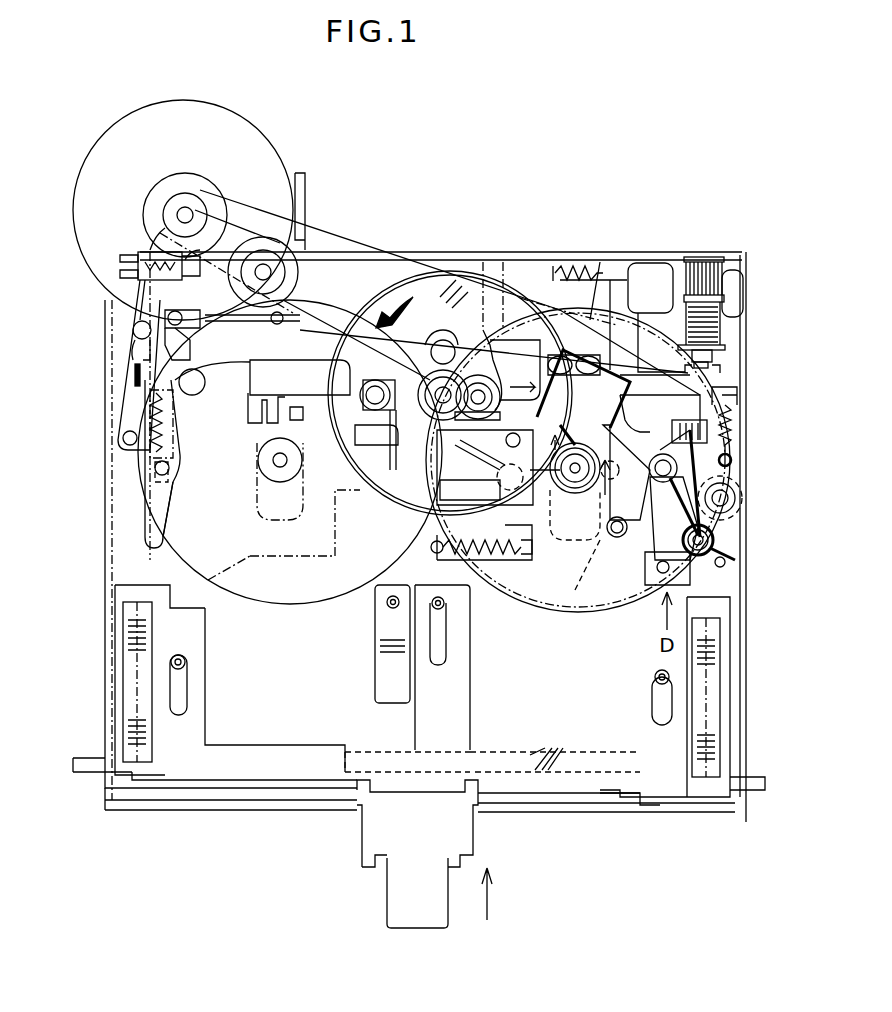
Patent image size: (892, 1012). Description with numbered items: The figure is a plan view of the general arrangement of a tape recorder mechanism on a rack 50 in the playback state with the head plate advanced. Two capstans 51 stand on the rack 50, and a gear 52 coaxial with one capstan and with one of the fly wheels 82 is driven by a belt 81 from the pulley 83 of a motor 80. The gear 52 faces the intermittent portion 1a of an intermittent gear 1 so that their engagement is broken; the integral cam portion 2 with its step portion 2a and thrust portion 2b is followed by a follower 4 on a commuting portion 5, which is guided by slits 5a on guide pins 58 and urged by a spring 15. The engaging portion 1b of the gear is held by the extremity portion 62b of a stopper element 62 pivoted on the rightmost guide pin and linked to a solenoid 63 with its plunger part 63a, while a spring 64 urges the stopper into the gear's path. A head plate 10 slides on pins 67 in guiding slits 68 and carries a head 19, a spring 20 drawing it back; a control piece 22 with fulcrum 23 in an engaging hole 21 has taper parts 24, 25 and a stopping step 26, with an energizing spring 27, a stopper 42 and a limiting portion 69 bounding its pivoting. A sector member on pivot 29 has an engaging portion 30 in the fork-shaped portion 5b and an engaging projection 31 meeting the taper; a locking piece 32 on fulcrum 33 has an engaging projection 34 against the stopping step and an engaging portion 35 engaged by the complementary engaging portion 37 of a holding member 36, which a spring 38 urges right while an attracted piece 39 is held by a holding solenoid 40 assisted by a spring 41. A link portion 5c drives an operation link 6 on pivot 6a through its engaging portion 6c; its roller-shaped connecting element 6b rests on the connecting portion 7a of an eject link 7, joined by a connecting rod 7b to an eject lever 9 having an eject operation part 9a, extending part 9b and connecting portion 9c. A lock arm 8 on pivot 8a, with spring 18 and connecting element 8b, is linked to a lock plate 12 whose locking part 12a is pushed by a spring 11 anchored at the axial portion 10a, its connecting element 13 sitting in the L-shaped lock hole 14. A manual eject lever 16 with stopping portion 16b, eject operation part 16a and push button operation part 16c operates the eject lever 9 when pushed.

The intermittent gear 1 is at (380, 275).
The intermittent portion 1a is at (499, 475).
The engaging portion 1b is at (484, 467).
The cam portion 2 is at (450, 345).
The step portion 2a is at (504, 358).
The thrust portion 2b is at (452, 344).
The follower 4 is at (515, 371).
The commuting portion 5 is at (636, 335).
The slits 5a is at (618, 332).
The fork-shaped portion 5b is at (262, 406).
The link portion 5c is at (663, 419).
The operation link 6 is at (736, 496).
The pivot 6a is at (732, 508).
The connecting element 6b is at (618, 548).
The engaging portion 6c is at (732, 457).
The eject link 7 is at (674, 495).
The connecting portion 7a is at (586, 565).
The connecting rod 7b is at (672, 570).
The lock arm 8 is at (712, 532).
The pivot 8a is at (728, 566).
The connecting element 8b is at (678, 468).
The eject lever 9 is at (728, 615).
The eject operation part 9a is at (752, 780).
The extending part 9b is at (545, 748).
The connecting portion 9c is at (622, 775).
The head plate 10 is at (484, 300).
The axial portion 10a is at (382, 561).
The spring 11 is at (602, 262).
The lock plate 12 is at (738, 400).
The locking part 12a is at (568, 304).
The connecting element 13 is at (523, 486).
The lock hole 14 is at (513, 446).
The spring 15 is at (495, 549).
The manual eject lever 16 is at (565, 800).
The eject operation part 16a is at (88, 762).
The stopping portion 16b is at (625, 800).
The push button operation part 16c is at (440, 915).
The spring 18 is at (715, 548).
The head 19 is at (425, 580).
The spring 20 is at (130, 680).
The engaging hole 21 is at (174, 492).
The control piece 22 is at (145, 500).
The fulcrum 23 is at (185, 315).
The taper part 24 is at (178, 344).
The taper part 25 is at (143, 362).
The stopping step 26 is at (135, 342).
The energizing spring 27 is at (170, 440).
The pivot 29 is at (288, 318).
The engaging portion 30 is at (271, 420).
The engaging projection 31 is at (188, 318).
The locking piece 32 is at (122, 415).
The fulcrum 33 is at (123, 440).
The engaging projection 34 is at (132, 330).
The engaging portion 35 is at (140, 262).
The holding member 36 is at (310, 250).
The complementary engaging portion 37 is at (120, 270).
The spring 38 is at (160, 240).
The attracted piece 39 is at (650, 263).
The holding solenoid 40 is at (702, 257).
The spring 41 is at (583, 268).
The stopper 42 is at (198, 392).
The rack 50 is at (110, 555).
The capstans 51 is at (281, 470).
The gear 52 is at (575, 488).
The guide pins 58 is at (592, 312).
The stopper element 62 is at (612, 380).
The extremity portion 62b is at (487, 411).
The solenoid 63 is at (722, 320).
The plunger 63a is at (712, 357).
The spring 64 is at (733, 420).
The pins 67 is at (186, 663).
The guiding slits 68 is at (190, 700).
The limiting portion 69 is at (135, 378).
The motor 80 is at (178, 108).
The belt 81 is at (350, 243).
The fly wheels 82 is at (300, 598).
The pulley 83 is at (200, 205).